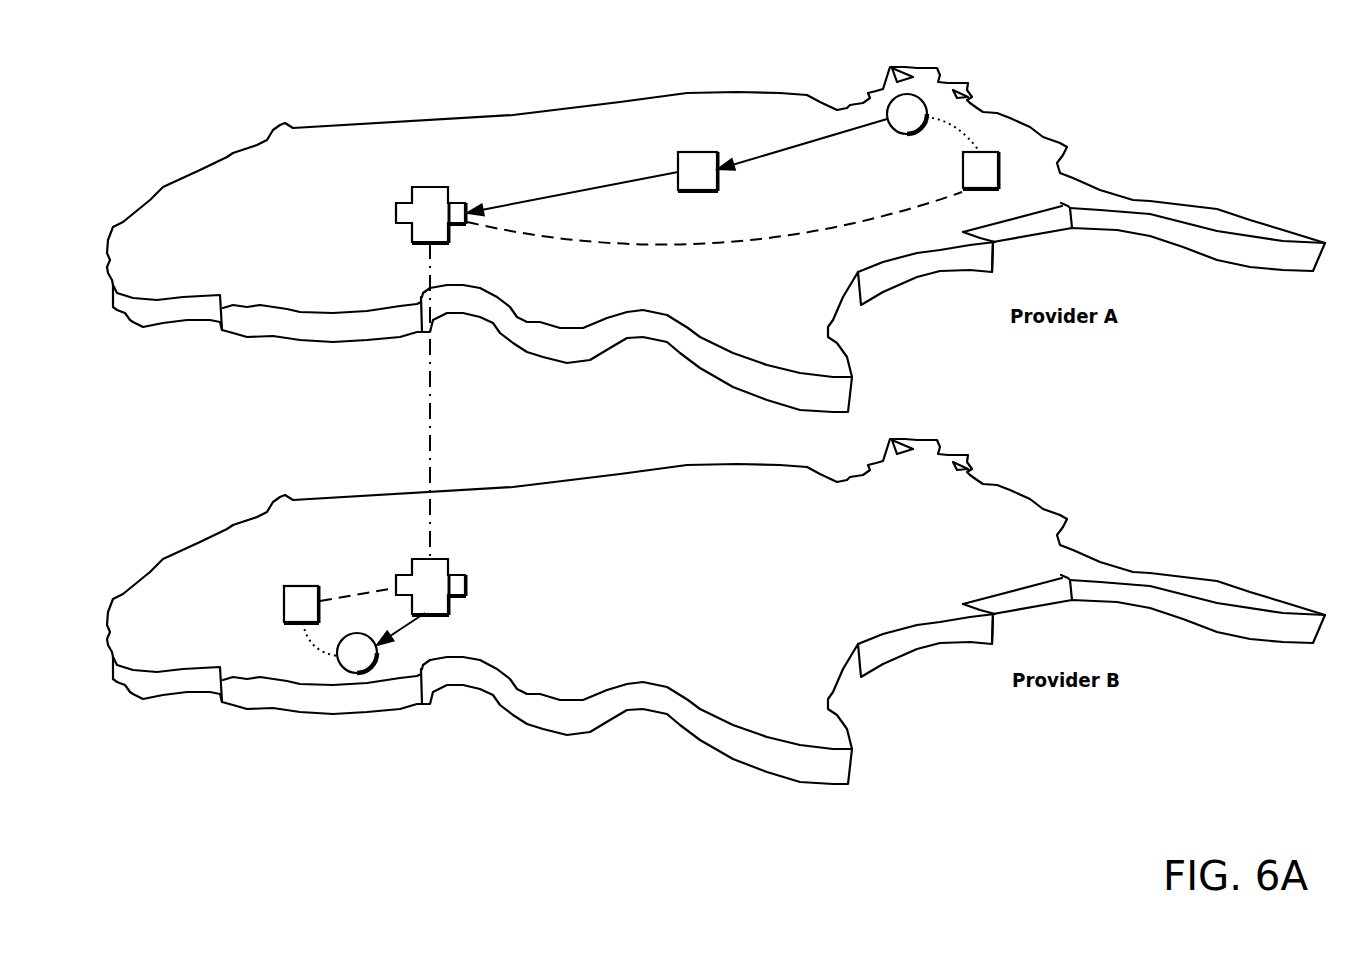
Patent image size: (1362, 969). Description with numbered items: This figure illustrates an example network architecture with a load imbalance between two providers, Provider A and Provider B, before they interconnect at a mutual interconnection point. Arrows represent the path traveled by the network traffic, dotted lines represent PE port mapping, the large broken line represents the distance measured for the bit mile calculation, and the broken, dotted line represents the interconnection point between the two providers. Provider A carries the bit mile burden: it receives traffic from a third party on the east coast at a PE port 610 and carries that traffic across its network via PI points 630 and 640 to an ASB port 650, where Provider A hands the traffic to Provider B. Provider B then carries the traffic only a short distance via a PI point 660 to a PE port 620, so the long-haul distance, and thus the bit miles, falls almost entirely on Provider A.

The PE port 610 is at (903, 95).
The PE port 620 is at (357, 673).
The PI point 630 is at (999, 168).
The PI point 640 is at (695, 152).
The ASB port 650 is at (430, 187).
The PI point 660 is at (283, 603).